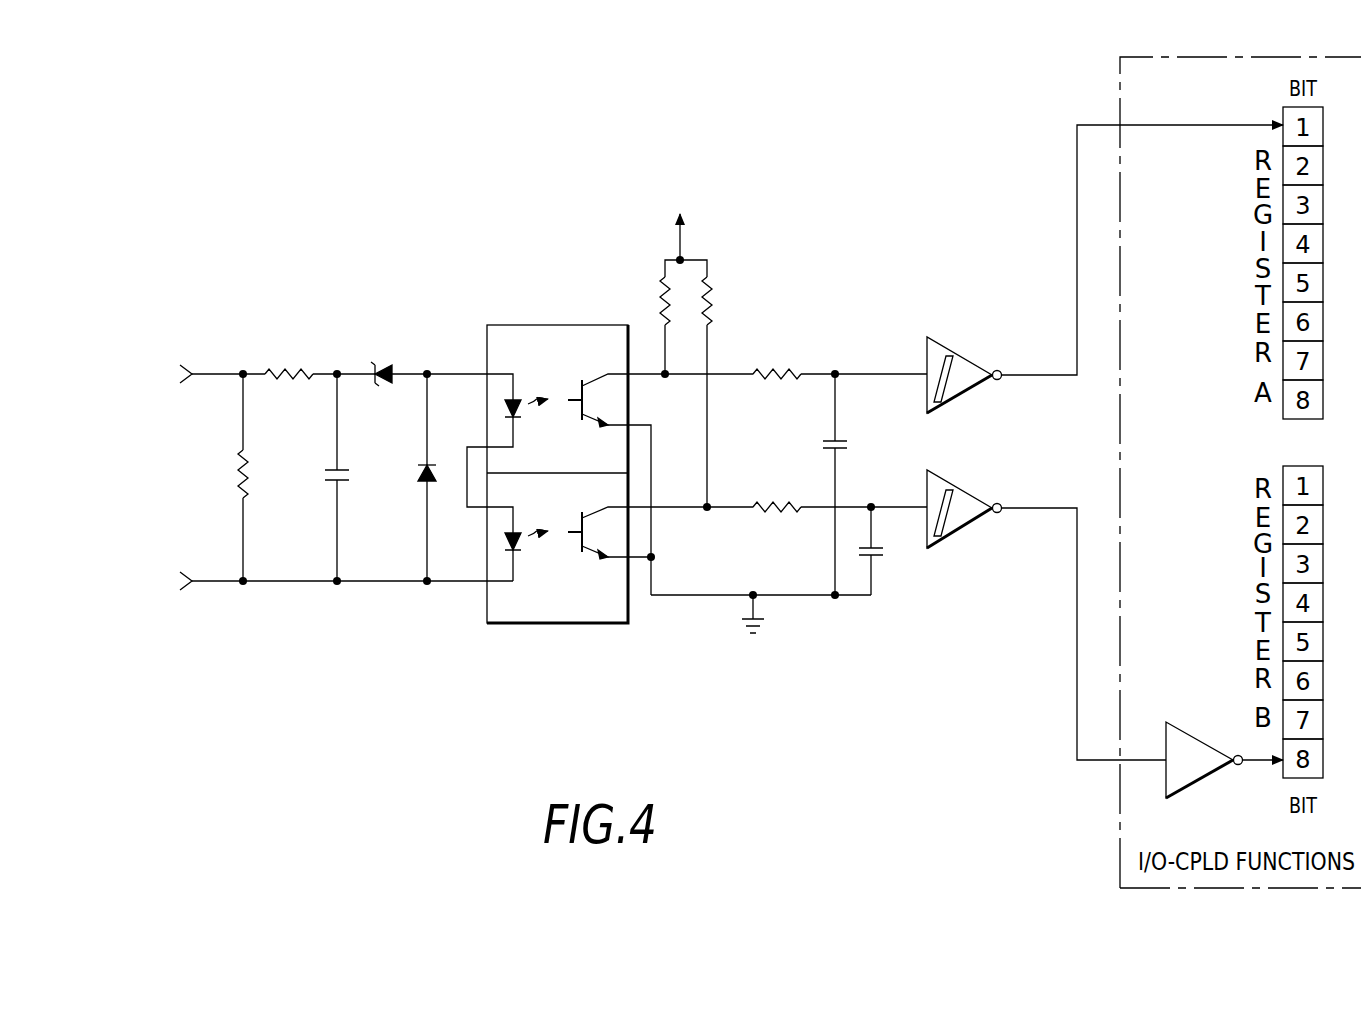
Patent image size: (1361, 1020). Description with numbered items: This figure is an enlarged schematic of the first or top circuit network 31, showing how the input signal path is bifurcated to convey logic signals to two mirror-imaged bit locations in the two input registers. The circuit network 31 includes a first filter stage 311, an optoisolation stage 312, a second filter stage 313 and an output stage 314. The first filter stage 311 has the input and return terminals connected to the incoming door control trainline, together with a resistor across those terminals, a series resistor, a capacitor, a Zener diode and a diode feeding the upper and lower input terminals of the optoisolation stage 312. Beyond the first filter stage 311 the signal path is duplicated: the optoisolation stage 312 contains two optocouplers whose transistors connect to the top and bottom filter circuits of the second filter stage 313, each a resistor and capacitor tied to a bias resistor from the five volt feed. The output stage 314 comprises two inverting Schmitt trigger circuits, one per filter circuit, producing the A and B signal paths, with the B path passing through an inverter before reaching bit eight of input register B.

The circuit network 31 is at (158, 340).
The first filter stage 311 is at (248, 643).
The optoisolation stage 312 is at (500, 643).
The second filter stage 313 is at (705, 645).
The output stage 314 is at (942, 645).